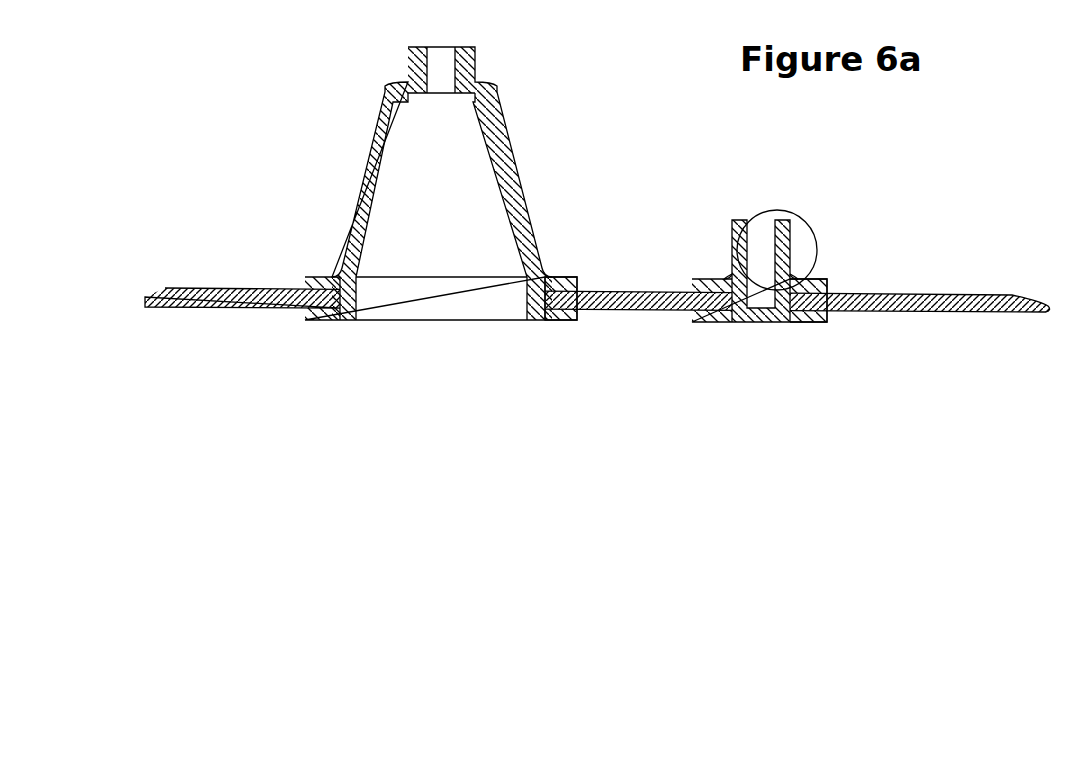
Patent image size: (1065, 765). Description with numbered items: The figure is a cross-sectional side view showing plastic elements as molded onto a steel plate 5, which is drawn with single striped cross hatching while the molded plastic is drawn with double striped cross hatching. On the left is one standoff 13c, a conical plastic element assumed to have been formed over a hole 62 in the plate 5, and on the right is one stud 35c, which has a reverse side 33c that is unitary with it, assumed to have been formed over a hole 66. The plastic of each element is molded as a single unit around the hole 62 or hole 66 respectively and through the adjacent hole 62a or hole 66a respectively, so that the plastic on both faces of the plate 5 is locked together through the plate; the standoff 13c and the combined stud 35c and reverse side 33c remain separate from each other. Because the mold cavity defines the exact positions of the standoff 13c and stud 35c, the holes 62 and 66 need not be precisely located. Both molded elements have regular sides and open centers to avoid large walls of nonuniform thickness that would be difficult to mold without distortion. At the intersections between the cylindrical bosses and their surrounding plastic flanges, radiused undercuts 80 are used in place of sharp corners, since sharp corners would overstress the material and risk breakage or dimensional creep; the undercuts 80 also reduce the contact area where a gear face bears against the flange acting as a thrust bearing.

The plate 5 is at (645, 312).
The standoff 13c is at (503, 129).
The reverse side 33c is at (767, 318).
The stud 35c is at (795, 220).
The hole 62 is at (330, 320).
The hole 62a is at (582, 313).
The hole 66 is at (713, 322).
The hole 66a is at (832, 313).
The radiused undercut 80 is at (730, 279).